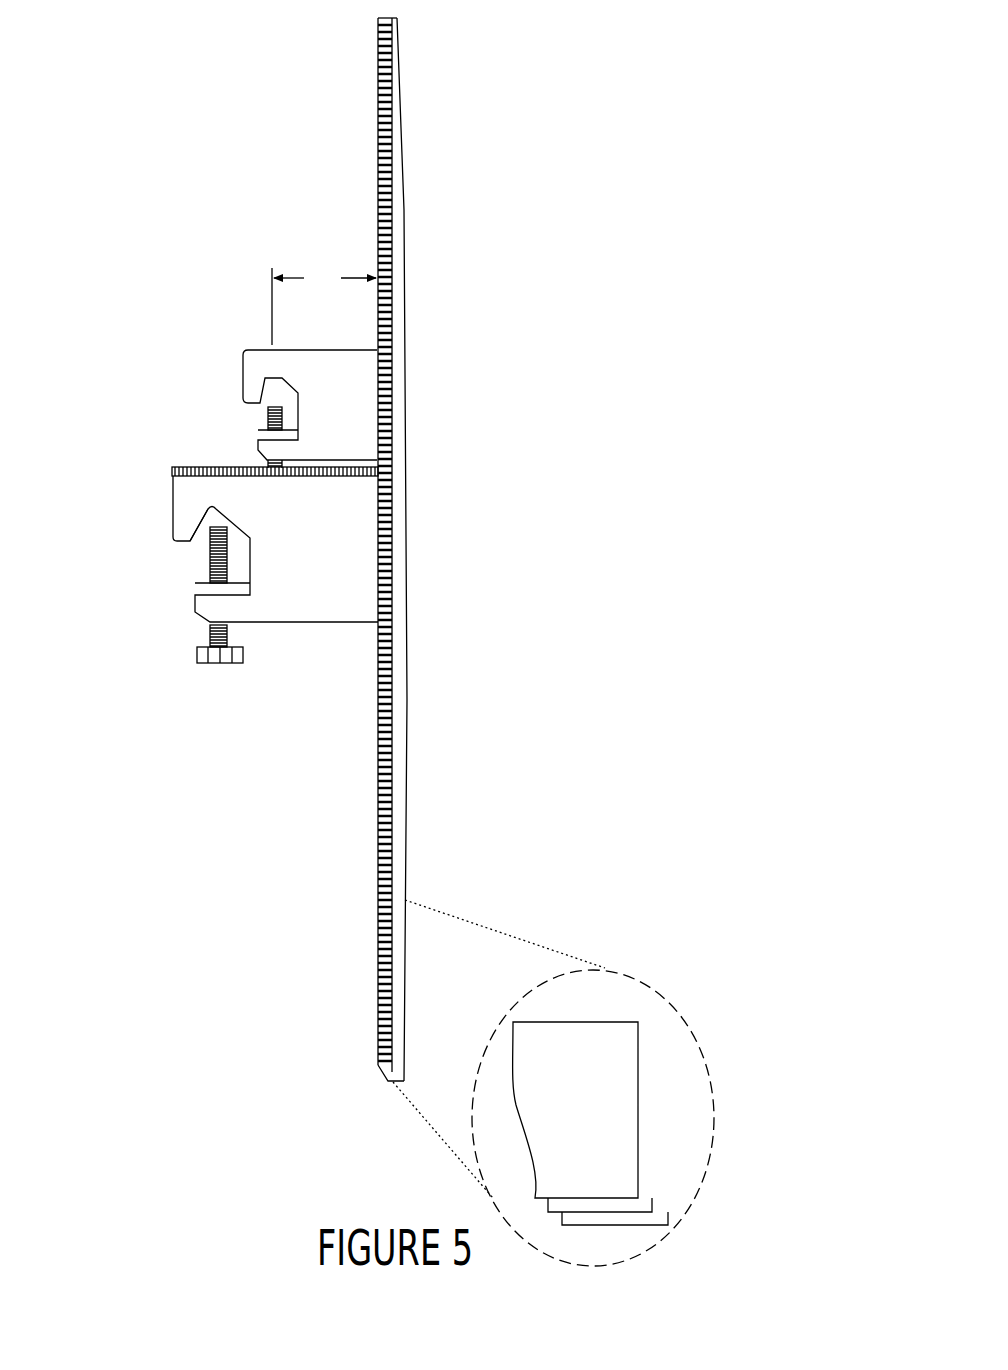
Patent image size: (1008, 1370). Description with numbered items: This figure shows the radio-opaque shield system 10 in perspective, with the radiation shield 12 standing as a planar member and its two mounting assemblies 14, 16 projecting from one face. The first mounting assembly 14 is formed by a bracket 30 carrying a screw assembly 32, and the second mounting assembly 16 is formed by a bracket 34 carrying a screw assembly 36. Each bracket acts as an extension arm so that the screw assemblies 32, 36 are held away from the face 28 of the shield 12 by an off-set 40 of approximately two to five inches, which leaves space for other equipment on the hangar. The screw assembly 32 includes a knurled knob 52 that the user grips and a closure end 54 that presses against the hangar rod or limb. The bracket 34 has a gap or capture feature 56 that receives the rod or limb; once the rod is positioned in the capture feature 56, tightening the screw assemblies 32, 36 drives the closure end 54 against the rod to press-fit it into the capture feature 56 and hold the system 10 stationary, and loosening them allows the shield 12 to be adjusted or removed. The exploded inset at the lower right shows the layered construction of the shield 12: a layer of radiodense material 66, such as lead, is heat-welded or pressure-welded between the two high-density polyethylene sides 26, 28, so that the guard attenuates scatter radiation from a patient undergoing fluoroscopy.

The shield system 10 is at (158, 156).
The radiation shield 12 is at (521, 621).
The first mounting assembly 14 is at (280, 375).
The second mounting assembly 16 is at (223, 495).
The side of the shield 26 is at (408, 682).
The face of the shield 28 is at (377, 747).
The bracket 30 is at (326, 418).
The screw assembly 32 is at (243, 417).
The bracket 34 is at (303, 565).
The screw assembly 36 is at (183, 646).
The off-set 40 is at (324, 304).
The knurled knob 52 is at (197, 652).
The closure end 54 is at (207, 537).
The capture feature 56 is at (210, 516).
The radiodense material 66 is at (640, 1200).